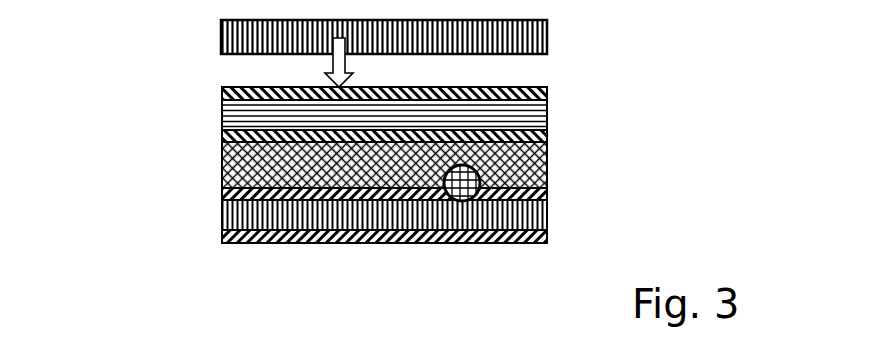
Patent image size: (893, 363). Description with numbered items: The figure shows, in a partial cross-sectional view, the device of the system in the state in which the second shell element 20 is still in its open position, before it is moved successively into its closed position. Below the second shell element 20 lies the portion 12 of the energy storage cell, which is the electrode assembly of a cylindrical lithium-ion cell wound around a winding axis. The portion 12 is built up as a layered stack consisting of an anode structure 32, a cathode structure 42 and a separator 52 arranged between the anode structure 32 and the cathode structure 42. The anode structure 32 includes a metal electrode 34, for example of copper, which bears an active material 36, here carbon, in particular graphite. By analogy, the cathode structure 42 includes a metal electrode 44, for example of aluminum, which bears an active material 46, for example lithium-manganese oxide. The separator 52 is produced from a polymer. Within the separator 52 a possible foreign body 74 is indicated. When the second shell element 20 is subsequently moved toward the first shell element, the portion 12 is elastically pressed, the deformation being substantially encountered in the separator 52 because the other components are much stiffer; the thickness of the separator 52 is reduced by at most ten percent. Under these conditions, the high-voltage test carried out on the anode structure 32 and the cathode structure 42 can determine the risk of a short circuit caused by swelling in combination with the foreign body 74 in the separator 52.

The portion of an energy storage cell 12 is at (399, 185).
The second shell element 20 is at (547, 31).
The anode structure 32 is at (339, 216).
The metal electrode 34 is at (222, 218).
The active material 36 is at (222, 195).
The cathode structure 42 is at (339, 111).
The metal electrode 44 is at (222, 115).
The active material 46 is at (222, 93).
The separator 52 is at (571, 142).
The foreign body 74 is at (465, 186).